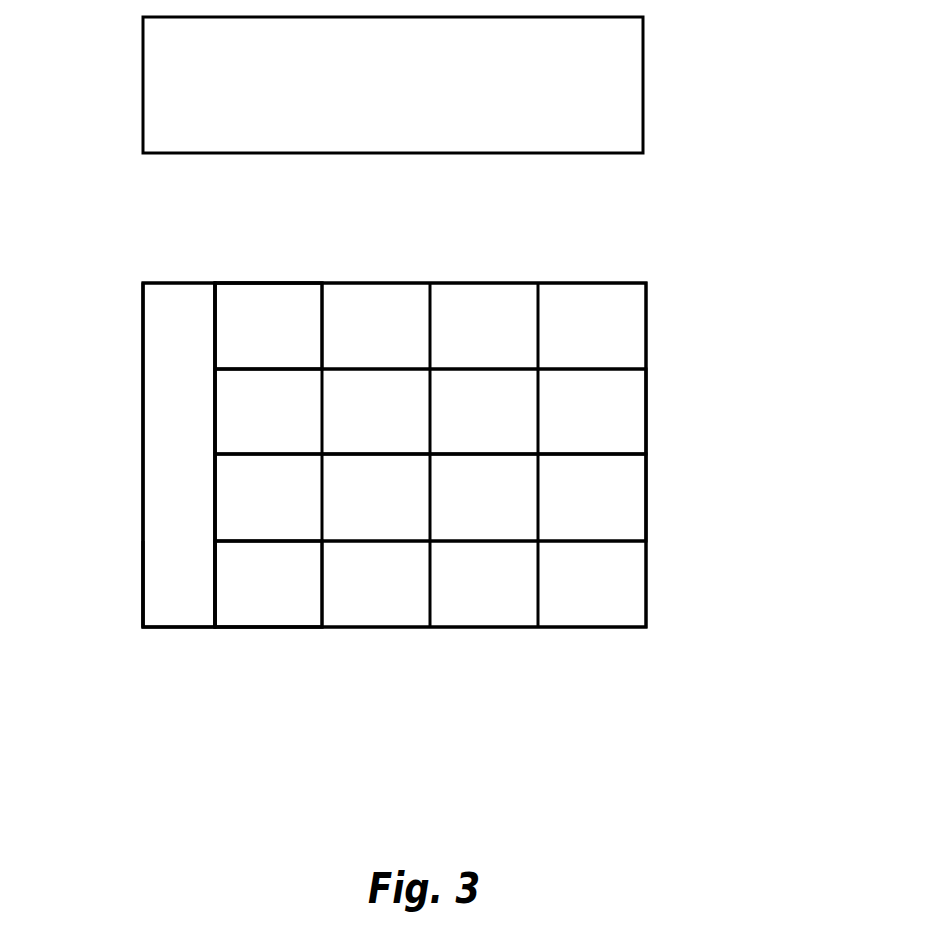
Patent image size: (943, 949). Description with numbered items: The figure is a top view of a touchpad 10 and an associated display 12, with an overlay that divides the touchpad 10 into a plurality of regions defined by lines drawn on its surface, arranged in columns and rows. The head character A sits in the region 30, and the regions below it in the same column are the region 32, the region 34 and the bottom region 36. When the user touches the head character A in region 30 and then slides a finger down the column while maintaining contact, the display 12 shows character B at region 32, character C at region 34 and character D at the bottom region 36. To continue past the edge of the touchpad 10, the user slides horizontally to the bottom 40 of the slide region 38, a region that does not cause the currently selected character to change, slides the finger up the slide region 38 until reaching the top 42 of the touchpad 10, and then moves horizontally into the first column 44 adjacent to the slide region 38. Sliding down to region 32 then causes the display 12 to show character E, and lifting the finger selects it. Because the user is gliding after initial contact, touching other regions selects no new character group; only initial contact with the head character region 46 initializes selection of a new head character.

The touchpad 10 is at (706, 390).
The display 12 is at (618, 83).
The region 30 is at (280, 310).
The region 32 is at (232, 388).
The region 34 is at (232, 530).
The bottom region 36 is at (238, 613).
The slide region 38 is at (168, 487).
The bottom 40 is at (167, 628).
The top 42 is at (170, 283).
The first column 44 is at (318, 256).
The head character region 46 is at (647, 637).